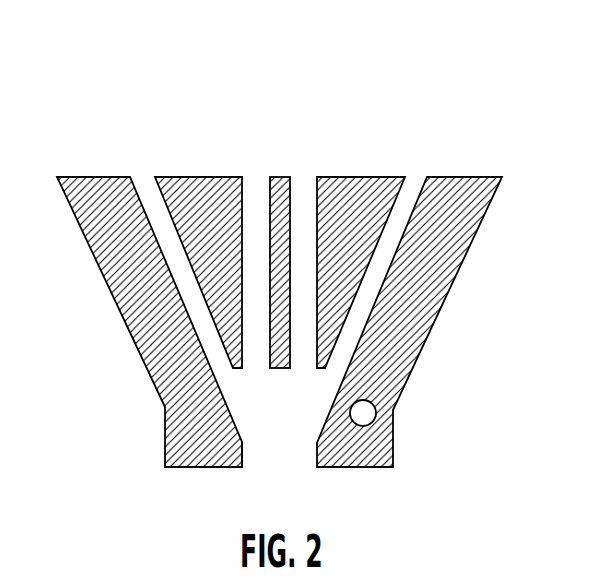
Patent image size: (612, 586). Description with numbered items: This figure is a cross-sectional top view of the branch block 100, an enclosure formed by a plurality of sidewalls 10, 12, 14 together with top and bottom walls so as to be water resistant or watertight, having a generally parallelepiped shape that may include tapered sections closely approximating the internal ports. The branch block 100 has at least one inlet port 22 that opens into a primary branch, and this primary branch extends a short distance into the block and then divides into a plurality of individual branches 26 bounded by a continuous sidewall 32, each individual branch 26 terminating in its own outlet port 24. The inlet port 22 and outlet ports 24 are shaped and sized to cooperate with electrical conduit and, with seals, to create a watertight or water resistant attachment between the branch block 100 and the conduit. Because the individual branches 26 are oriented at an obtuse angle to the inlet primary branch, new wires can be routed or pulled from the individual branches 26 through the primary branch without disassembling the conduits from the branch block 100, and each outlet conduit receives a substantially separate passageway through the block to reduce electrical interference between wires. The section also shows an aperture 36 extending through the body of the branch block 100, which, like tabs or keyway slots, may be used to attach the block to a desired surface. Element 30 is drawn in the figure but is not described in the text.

The branch block 100 is at (160, 88).
The sidewall 10 is at (355, 468).
The sidewall 12 is at (352, 177).
The sidewall 14 is at (437, 320).
The inlet port 22 is at (285, 443).
The outlet port 24 is at (128, 176).
The individual branch 26 is at (157, 230).
The side edge 30 is at (253, 462).
The continuous sidewall 32 is at (242, 470).
The aperture 36 is at (378, 398).